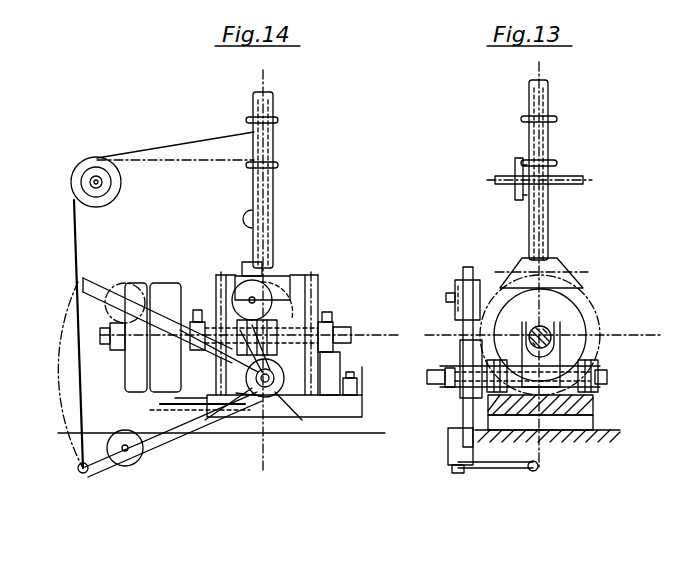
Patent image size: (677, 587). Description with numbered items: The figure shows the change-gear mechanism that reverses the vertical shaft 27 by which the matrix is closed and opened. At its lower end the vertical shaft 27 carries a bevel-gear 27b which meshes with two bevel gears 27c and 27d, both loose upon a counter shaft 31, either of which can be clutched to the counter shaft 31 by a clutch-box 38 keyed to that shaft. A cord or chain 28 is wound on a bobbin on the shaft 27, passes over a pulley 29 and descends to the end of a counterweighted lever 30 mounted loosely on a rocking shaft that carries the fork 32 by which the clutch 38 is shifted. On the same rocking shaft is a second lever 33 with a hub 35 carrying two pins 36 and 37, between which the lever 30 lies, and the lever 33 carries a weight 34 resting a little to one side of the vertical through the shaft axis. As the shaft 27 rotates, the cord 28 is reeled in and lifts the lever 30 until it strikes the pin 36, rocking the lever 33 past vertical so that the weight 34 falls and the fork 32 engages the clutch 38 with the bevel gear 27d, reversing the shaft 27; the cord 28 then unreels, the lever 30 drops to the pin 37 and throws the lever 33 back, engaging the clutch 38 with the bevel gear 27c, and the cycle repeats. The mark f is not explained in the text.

In FIG. 14, the vertical shaft 27 is at (279, 182).
In FIG. 13, the vertical shaft 27 is at (549, 224).
In FIG. 14, the bevel-gear 27b is at (290, 252).
In FIG. 13, the bevel-gear 27b is at (577, 266).
In FIG. 14, the bevel gear 27c is at (318, 300).
In FIG. 13, the bevel gear 27c is at (597, 308).
In FIG. 14, the bevel gear 27d is at (222, 282).
In FIG. 14, the cord or chain 28 is at (152, 299).
In FIG. 14, the pulley 29 is at (101, 186).
In FIG. 14, the lever 30 is at (186, 426).
In FIG. 14, the counter shaft 31 is at (270, 393).
In FIG. 13, the counter shaft 31 is at (608, 377).
In FIG. 14, the fork 32 is at (238, 332).
In FIG. 13, the fork 32 is at (552, 368).
In FIG. 14, the second lever 33 is at (326, 322).
In FIG. 13, the second lever 33 is at (470, 352).
In FIG. 14, the weight 34 is at (268, 300).
In FIG. 13, the weight 34 is at (476, 306).
In FIG. 14, the hub 35 is at (298, 394).
In FIG. 14, the pin 36 is at (200, 407).
In FIG. 14, the pin 37 is at (259, 394).
In FIG. 14, the clutch-box 38 is at (270, 348).
In FIG. 14, the fulcrum point f is at (246, 219).